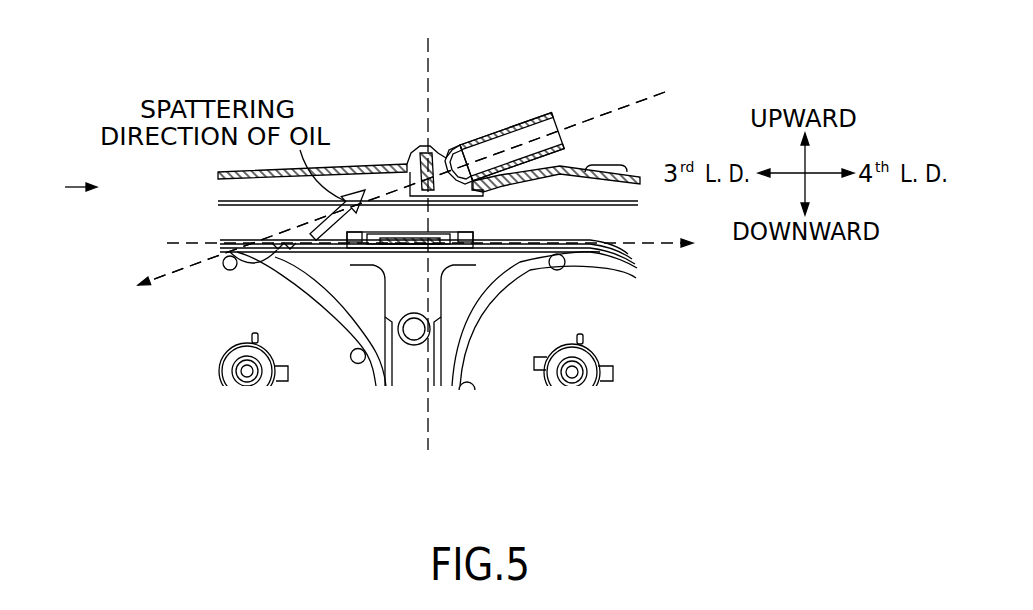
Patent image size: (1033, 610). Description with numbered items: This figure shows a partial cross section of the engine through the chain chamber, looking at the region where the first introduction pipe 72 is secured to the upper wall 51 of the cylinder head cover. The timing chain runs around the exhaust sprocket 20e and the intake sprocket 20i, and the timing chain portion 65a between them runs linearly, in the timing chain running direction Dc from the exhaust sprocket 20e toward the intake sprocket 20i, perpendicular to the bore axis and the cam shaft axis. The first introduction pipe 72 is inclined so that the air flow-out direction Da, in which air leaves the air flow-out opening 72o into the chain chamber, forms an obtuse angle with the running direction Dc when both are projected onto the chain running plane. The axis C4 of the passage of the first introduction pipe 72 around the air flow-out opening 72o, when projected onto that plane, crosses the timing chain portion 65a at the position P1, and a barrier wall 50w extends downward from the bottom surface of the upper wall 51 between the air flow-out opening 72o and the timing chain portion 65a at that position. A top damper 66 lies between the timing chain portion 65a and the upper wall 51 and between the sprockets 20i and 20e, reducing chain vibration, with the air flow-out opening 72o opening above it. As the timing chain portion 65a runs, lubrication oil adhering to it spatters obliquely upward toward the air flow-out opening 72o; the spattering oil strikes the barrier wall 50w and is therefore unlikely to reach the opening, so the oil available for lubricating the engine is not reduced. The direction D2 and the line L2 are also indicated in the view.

The exhaust sprocket 20e is at (320, 380).
The intake sprocket 20i is at (510, 380).
The barrier wall 50w is at (423, 147).
The upper wall 51 is at (633, 173).
The timing chain portion 65a is at (303, 246).
The top damper 66 is at (407, 237).
The first introduction pipe 72 is at (513, 127).
The air flow-out opening 72o is at (452, 147).
The position P1 is at (257, 238).
The reference line L2 is at (430, 58).
The axis of passage of the first introduction pipe C4 is at (655, 90).
The air flow-out direction Da is at (401, 188).
The second direction D2 is at (63, 189).
The timing chain running direction Dc is at (663, 247).